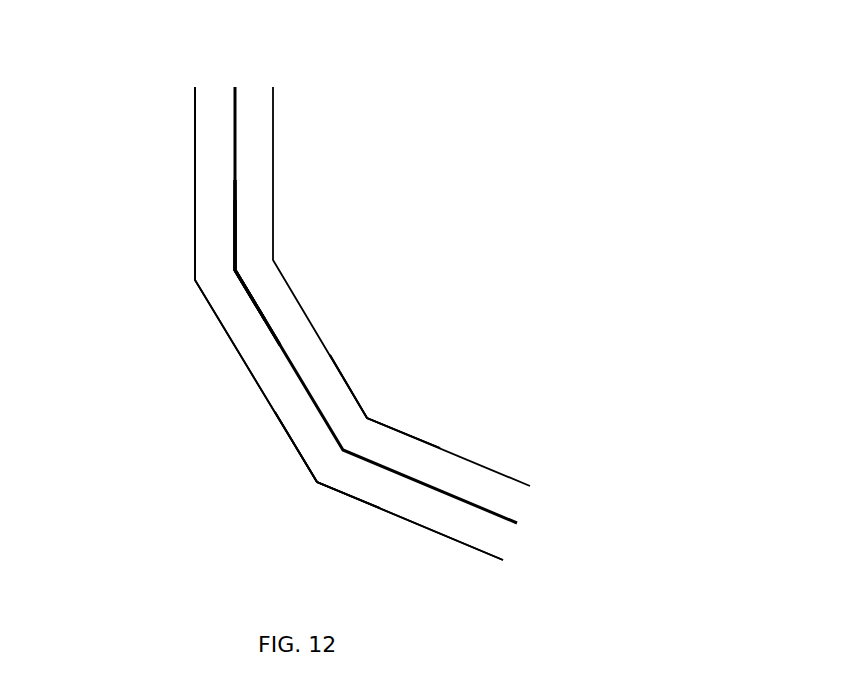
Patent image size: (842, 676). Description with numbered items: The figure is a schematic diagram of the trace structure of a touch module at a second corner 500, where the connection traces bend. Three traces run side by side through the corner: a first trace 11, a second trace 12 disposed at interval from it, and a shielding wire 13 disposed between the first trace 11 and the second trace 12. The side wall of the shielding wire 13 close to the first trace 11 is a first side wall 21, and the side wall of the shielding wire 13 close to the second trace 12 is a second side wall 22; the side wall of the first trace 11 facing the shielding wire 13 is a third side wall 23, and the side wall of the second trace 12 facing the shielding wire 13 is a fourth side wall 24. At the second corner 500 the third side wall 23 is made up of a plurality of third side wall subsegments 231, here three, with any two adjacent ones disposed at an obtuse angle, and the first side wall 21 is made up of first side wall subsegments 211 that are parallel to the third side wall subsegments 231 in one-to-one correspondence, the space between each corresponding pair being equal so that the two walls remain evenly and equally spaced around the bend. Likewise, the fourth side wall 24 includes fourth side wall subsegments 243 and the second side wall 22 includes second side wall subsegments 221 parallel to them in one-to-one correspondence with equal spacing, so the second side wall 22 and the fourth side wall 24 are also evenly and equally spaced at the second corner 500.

The second corner 500 is at (140, 88).
The first trace 11 is at (275, 152).
The second trace 12 is at (195, 165).
The shielding wire 13 is at (236, 106).
The first side wall 21 is at (385, 232).
The first side wall subsegment 211 is at (236, 205).
The second side wall 22 is at (132, 250).
The second side wall subsegment 221 is at (233, 217).
The third side wall 23 is at (467, 362).
The third side wall subsegment 231 is at (355, 385).
The fourth side wall 24 is at (220, 523).
The fourth side wall subsegment 243 is at (288, 440).